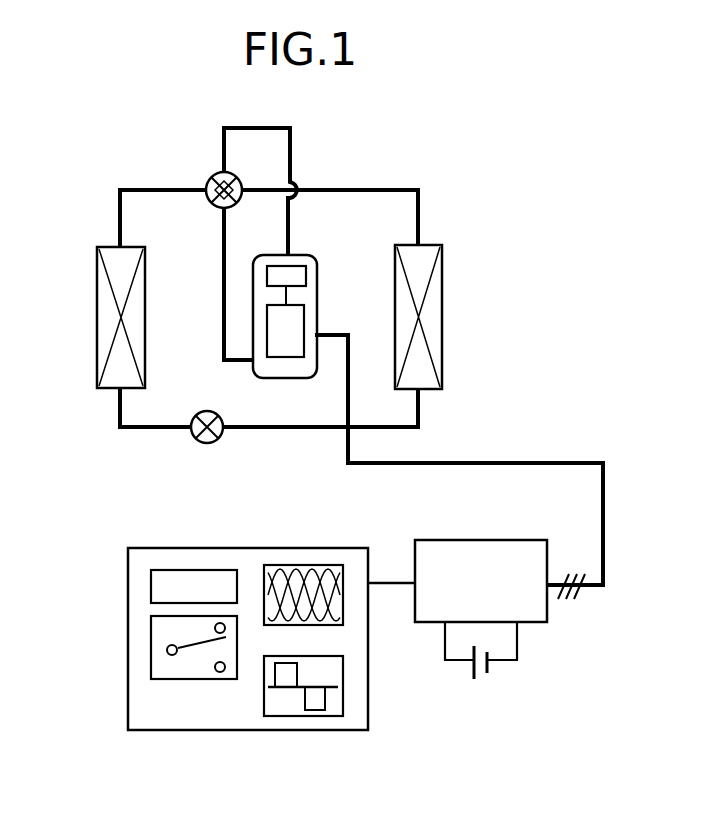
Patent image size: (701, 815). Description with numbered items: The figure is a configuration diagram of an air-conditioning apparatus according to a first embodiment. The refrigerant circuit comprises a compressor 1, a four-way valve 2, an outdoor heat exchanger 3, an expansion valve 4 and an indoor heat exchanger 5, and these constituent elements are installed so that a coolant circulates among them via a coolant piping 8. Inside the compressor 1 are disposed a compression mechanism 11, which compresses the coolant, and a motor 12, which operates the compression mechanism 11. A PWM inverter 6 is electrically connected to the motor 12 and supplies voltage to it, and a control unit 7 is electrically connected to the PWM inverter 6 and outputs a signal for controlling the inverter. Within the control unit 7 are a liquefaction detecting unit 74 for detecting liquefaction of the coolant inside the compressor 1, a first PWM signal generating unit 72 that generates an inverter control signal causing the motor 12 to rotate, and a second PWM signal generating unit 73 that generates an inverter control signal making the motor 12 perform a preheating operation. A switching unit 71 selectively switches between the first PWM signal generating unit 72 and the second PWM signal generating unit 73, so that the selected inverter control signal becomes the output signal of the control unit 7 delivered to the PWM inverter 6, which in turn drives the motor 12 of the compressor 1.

The compressor 1 is at (318, 242).
The four-way valve 2 is at (192, 164).
The outdoor heat exchanger 3 is at (96, 275).
The expansion valve 4 is at (190, 461).
The indoor heat exchanger 5 is at (448, 280).
The PWM inverter 6 is at (500, 591).
The control unit 7 is at (221, 642).
The coolant piping 8 is at (298, 274).
The compression mechanism 11 is at (320, 264).
The motor 12 is at (320, 322).
The switching unit 71 is at (194, 703).
The first PWM signal generating unit 72 is at (308, 559).
The second PWM signal generating unit 73 is at (303, 723).
The liquefaction detecting unit 74 is at (155, 603).